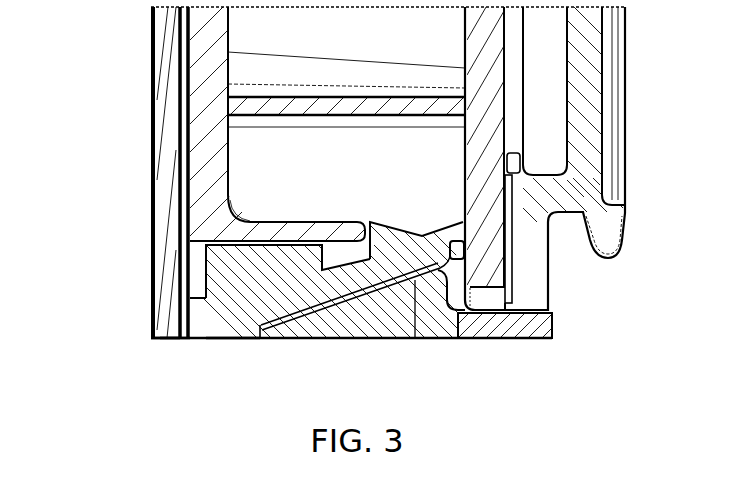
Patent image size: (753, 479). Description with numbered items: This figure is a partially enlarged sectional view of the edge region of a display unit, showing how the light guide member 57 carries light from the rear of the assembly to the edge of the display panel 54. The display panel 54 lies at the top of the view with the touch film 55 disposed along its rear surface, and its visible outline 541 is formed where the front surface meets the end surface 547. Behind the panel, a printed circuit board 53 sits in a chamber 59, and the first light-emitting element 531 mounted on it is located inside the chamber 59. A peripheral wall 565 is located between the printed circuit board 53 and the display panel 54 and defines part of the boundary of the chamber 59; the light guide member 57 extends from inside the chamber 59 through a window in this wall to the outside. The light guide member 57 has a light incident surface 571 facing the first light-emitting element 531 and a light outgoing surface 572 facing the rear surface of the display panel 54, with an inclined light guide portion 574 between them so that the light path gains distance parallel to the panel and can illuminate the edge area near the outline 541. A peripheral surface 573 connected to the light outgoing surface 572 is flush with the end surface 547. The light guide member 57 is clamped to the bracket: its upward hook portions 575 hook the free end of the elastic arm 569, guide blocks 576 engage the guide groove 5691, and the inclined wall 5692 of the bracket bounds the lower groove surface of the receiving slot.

The printed circuit board 53 is at (493, 105).
The display panel 54 is at (173, 77).
The touch film 55 is at (180, 165).
The light guide member 57 is at (200, 268).
The chamber 59 is at (457, 303).
The first light-emitting element 531 is at (452, 250).
The outline 541 is at (152, 338).
The end surface 547 is at (167, 339).
The peripheral wall 565 is at (397, 330).
The elastic arm 569 is at (258, 222).
The guide groove 5691 is at (195, 242).
The inclined wall 5692 is at (415, 338).
The light incident surface 571 is at (470, 235).
The light outgoing surface 572 is at (182, 318).
The peripheral surface 573 is at (238, 340).
The inclined light guide portion 574 is at (316, 322).
The hook portion 575 is at (397, 232).
The guide block 576 is at (285, 240).